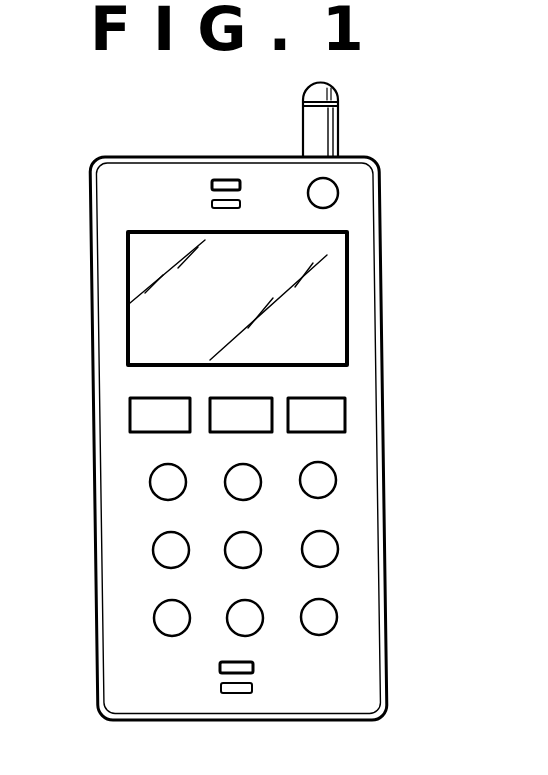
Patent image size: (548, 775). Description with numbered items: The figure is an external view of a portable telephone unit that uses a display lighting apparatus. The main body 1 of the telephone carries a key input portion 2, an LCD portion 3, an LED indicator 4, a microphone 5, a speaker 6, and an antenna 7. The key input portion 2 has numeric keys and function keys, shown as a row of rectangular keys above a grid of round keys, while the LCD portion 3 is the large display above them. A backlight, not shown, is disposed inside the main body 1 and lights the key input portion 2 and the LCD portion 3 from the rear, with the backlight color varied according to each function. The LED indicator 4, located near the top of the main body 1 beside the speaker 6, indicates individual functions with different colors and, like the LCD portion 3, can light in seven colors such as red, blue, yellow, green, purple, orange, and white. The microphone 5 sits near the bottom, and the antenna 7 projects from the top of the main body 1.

The main body 1 is at (102, 202).
The key input portion 2 is at (400, 393).
The LCD portion 3 is at (332, 302).
The LED indicator 4 is at (330, 193).
The microphone 5 is at (240, 694).
The speaker 6 is at (232, 180).
The antenna 7 is at (339, 92).